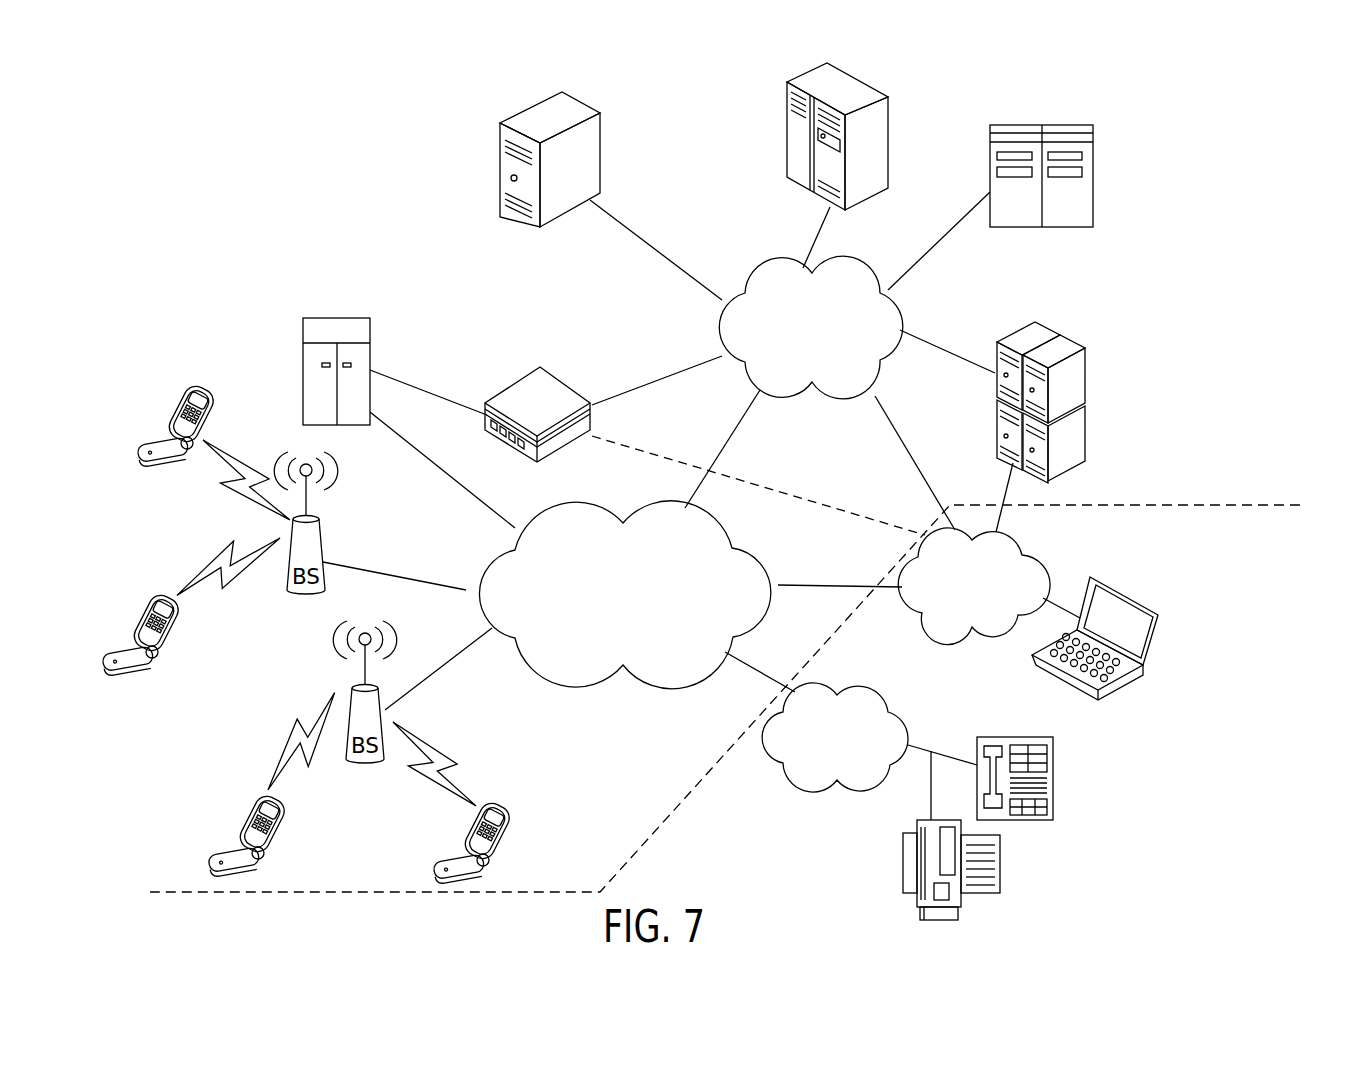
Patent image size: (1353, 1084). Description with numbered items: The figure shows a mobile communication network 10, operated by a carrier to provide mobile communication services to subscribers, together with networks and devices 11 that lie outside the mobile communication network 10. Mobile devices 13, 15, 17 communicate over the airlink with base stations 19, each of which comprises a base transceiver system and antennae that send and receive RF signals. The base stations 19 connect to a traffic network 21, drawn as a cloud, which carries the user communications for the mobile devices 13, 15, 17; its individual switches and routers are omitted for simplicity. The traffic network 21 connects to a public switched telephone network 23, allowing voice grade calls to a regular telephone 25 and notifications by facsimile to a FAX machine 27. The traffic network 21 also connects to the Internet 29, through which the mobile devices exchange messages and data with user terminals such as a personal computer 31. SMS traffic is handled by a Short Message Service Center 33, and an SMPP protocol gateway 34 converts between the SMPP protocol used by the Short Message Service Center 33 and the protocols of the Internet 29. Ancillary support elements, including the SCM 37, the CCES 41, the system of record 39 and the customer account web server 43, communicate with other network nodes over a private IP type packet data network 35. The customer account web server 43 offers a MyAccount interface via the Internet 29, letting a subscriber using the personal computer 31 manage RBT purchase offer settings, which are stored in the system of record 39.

The mobile communication network 10 is at (290, 183).
The networks and devices outside the mobile communication network 11 is at (979, 712).
The mobile device 13 is at (203, 402).
The mobile device 15 is at (222, 842).
The mobile device 17 is at (500, 806).
The base station 19 is at (320, 533).
The traffic network 21 is at (552, 686).
The public switched telephone network 23 is at (886, 692).
The telephone 25 is at (1053, 760).
The FAX machine 27 is at (1005, 863).
The Internet 29 is at (1016, 544).
The personal computer 31 is at (1138, 598).
The Short Message Service Center 33 is at (330, 318).
The SMPP protocol gateway 34 is at (512, 386).
The private IP type packet data network 35 is at (905, 310).
The SCM 37 is at (787, 128).
The system of record 39 is at (500, 166).
The CCES 41 is at (1096, 161).
The customer account web server 43 is at (1090, 366).